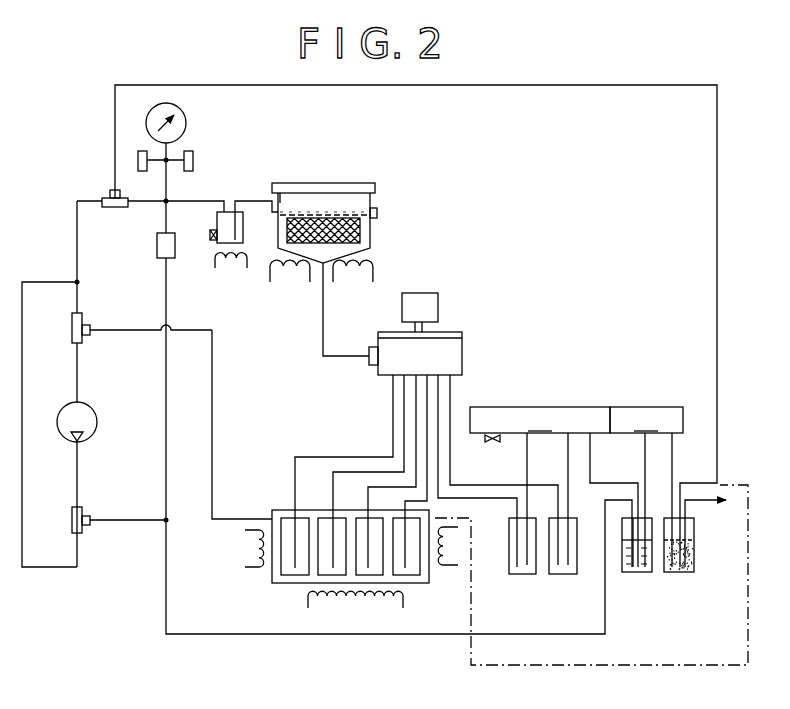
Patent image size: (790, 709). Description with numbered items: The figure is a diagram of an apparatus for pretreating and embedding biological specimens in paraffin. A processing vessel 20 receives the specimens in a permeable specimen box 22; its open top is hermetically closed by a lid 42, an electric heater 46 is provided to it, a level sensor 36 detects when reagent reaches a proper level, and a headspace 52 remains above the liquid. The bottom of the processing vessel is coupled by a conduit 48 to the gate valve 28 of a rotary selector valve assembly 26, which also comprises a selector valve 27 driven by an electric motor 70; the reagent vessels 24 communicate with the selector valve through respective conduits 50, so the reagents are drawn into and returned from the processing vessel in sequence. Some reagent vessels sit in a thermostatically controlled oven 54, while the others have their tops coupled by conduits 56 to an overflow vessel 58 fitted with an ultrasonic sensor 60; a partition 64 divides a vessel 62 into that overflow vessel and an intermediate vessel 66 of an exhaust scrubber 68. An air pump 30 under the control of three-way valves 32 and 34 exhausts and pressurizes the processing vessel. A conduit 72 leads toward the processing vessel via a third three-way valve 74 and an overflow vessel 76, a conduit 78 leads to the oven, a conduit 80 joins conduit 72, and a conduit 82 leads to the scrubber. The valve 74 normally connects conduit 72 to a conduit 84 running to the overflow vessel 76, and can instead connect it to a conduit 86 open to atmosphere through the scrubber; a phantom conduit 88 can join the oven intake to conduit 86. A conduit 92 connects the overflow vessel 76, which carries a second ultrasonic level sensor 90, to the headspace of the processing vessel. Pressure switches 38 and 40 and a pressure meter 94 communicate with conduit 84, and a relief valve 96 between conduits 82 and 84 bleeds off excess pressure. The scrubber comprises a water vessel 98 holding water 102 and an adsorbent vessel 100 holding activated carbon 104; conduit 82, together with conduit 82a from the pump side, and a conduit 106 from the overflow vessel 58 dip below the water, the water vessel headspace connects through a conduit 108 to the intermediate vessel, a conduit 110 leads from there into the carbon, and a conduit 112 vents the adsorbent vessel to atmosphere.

The processing vessel 20 is at (369, 250).
The specimen box 22 is at (360, 232).
The reagent vessels 24 is at (325, 574).
The rotary selector valve assembly 26 is at (454, 322).
The selector valve 27 is at (450, 358).
The gate valve 28 is at (372, 361).
The air pump 30 is at (86, 405).
The first three-way directional control valve 32 is at (82, 315).
The second three-way directional control valve 34 is at (82, 513).
The level sensor 36 is at (378, 210).
The first pressure switch 38 is at (141, 152).
The second pressure switch 40 is at (191, 153).
The lid 42 is at (313, 183).
The electric heater 46 is at (352, 280).
The conduit 48 is at (321, 318).
The conduits 50 is at (452, 398).
The headspace 52 is at (338, 196).
The oven 54 is at (283, 510).
The conduits 56 is at (528, 440).
The overflow vessel 58 is at (540, 420).
The ultrasonic sensor 60 is at (493, 443).
The vessel 62 is at (577, 406).
The partition 64 is at (622, 406).
The intermediate vessel 66 is at (646, 420).
The exhaust scrubber 68 is at (710, 578).
The electric motor 70 is at (425, 300).
The conduit 72 is at (77, 238).
The third three-way directional control valve 74 is at (104, 197).
The overflow vessel 76 is at (243, 218).
The conduit 78 is at (213, 372).
The conduit 80 is at (23, 395).
The conduit 82 is at (124, 522).
The conduit 82a is at (165, 603).
The conduit 84 is at (185, 201).
The conduit 86 is at (114, 105).
The phantom conduit 88 is at (624, 665).
The ultrasonic level sensor 90 is at (211, 233).
The conduit 92 is at (249, 199).
The pressure meter 94 is at (181, 113).
The relief valve 96 is at (157, 246).
The water vessel 98 is at (648, 573).
The adsorbent vessel 100 is at (672, 573).
The water 102 is at (630, 573).
The activated carbon 104 is at (694, 548).
The conduit 106 is at (592, 440).
The conduit 108 is at (647, 449).
The conduit 110 is at (674, 460).
The conduit 112 is at (703, 503).